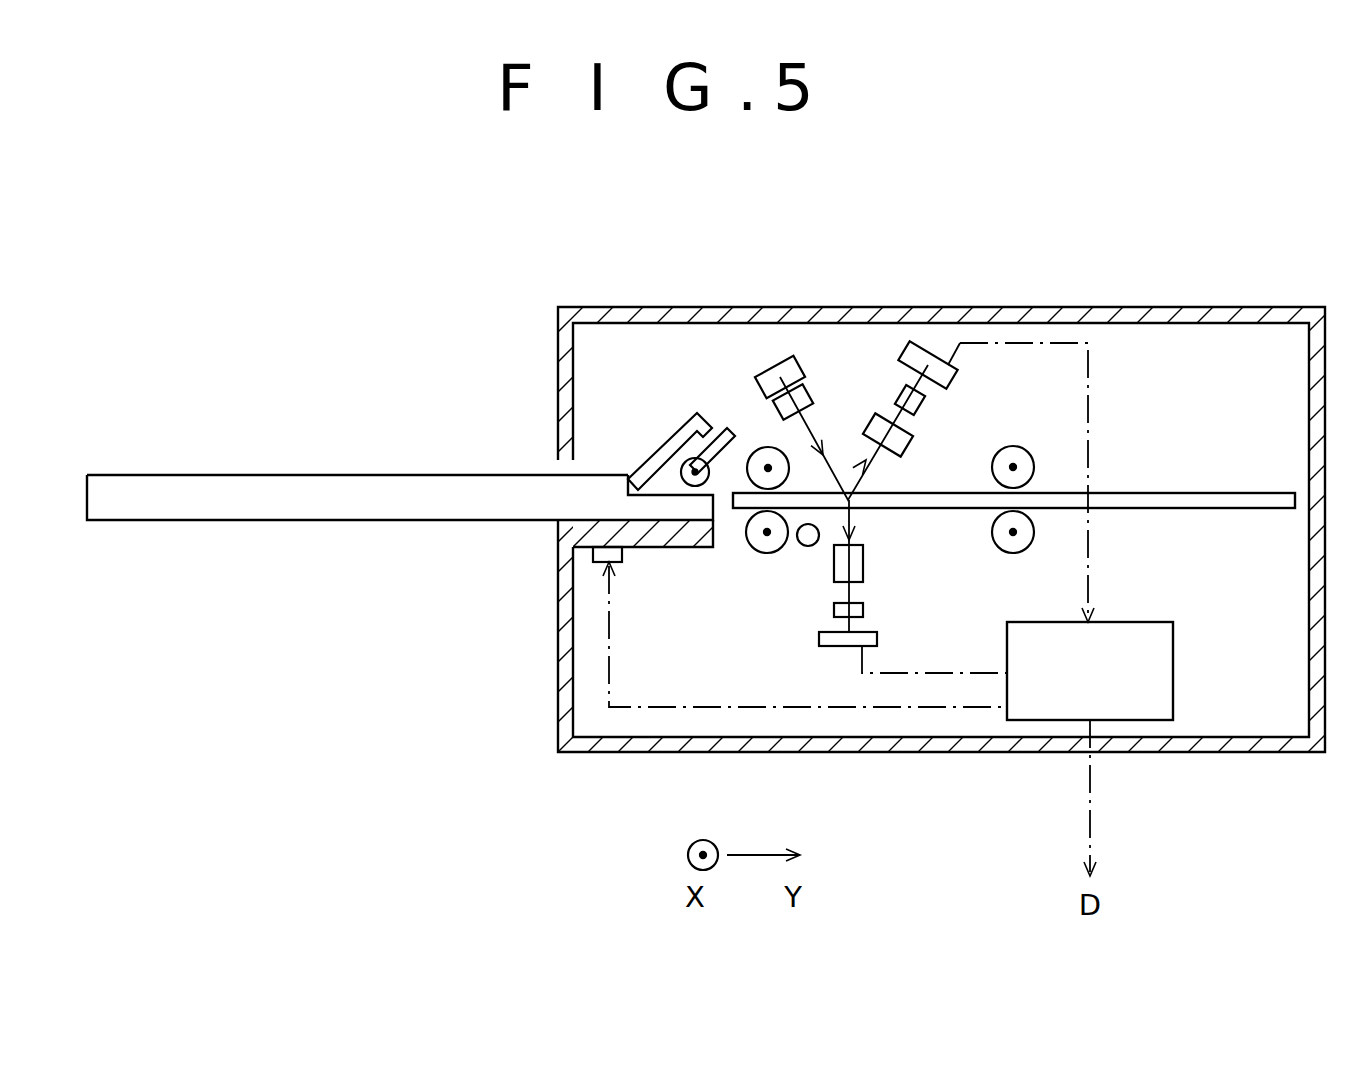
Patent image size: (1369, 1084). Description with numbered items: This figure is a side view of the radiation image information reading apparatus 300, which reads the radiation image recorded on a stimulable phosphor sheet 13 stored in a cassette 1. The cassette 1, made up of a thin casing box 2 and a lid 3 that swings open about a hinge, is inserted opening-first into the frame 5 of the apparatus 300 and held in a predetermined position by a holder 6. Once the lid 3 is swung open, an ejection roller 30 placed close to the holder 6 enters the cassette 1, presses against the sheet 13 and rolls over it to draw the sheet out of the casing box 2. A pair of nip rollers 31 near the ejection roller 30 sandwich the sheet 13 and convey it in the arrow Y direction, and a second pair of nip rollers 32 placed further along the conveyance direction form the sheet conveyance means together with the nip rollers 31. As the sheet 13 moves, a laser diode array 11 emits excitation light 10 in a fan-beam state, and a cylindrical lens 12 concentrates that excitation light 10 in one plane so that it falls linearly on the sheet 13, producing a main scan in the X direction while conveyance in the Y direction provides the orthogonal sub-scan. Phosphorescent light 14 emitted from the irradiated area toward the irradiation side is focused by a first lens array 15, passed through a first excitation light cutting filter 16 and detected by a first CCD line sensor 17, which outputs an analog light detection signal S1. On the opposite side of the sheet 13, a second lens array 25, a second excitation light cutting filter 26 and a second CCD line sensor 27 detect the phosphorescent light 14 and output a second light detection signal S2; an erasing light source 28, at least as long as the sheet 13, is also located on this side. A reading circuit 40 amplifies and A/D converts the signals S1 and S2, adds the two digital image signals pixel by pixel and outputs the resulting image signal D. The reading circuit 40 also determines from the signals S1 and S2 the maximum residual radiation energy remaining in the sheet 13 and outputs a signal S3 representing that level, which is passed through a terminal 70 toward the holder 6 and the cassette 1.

The cassette 1 is at (252, 472).
The casing box 2 is at (337, 520).
The lid 3 is at (657, 458).
The frame 5 is at (557, 320).
The holder 6 is at (538, 541).
The excitation light 10 is at (846, 440).
The laser diode array 11 is at (775, 364).
The cylindrical lens 12 is at (808, 405).
The stimulable phosphor sheet 13 is at (1237, 492).
The phosphorescent light 14 is at (872, 485).
The first lens array 15 is at (880, 424).
The first excitation light cutting filter 16 is at (900, 395).
The first CCD line sensor 17 is at (938, 350).
The second lens array 25 is at (864, 565).
The second excitation light cutting filter 26 is at (864, 610).
The second CCD line sensor 27 is at (818, 645).
The erasing light source 28 is at (806, 547).
The ejection roller 30 is at (690, 460).
The pair of nip rollers 31 is at (782, 522).
The pair of nip rollers 32 is at (1030, 470).
The reading circuit 40 is at (1112, 687).
The terminal 70 is at (622, 556).
The radiation image information reading apparatus 300 is at (978, 193).
The light detection signal S1 is at (1093, 438).
The light detection signal S2 is at (930, 675).
The signal representing maximum residual energy level S3 is at (668, 708).